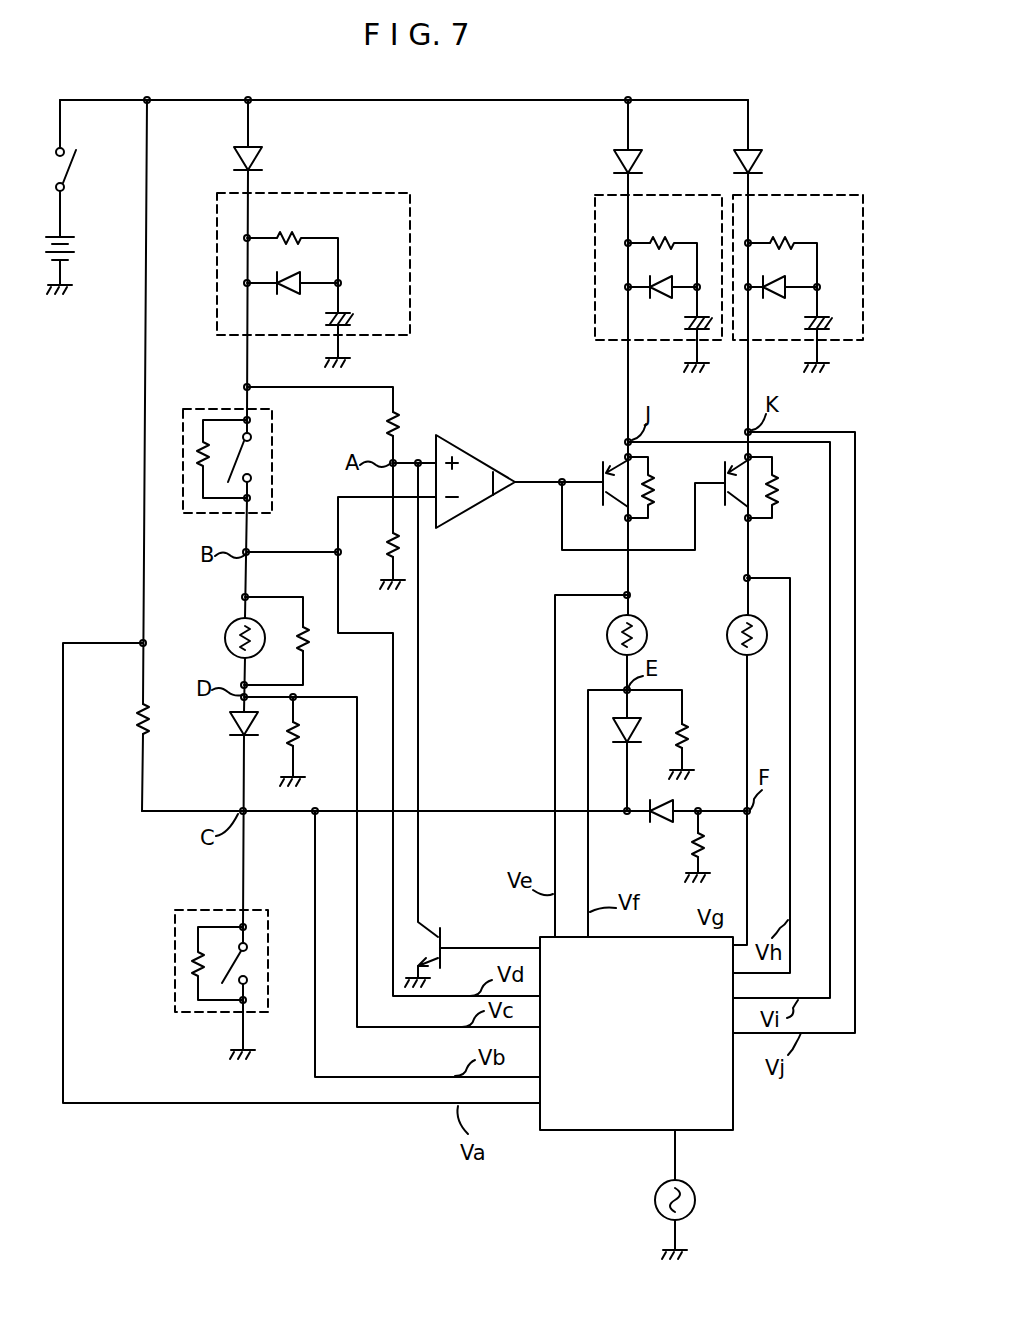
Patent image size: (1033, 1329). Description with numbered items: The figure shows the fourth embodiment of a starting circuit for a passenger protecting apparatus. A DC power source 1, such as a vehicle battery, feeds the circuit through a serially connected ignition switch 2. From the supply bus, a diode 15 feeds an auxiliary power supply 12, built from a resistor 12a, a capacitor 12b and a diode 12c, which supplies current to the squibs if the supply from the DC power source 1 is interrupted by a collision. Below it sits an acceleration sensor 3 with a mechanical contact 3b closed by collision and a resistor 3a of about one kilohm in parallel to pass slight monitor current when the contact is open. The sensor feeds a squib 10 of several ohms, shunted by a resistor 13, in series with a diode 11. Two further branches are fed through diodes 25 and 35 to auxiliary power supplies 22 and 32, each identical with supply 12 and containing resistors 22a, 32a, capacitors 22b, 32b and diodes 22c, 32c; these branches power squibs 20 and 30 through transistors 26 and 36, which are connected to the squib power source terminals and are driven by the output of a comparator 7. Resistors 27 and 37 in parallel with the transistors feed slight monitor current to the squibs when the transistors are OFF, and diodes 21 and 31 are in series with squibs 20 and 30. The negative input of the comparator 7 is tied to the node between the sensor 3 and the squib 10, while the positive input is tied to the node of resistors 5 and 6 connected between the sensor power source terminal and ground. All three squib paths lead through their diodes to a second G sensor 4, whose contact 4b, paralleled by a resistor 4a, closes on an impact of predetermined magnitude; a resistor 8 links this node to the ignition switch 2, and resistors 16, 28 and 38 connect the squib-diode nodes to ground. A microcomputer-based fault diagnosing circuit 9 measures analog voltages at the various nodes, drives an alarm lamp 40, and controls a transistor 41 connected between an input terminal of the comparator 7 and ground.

The DC power source 1 is at (75, 247).
The ignition switch 2 is at (78, 168).
The acceleration sensor 3 is at (203, 406).
The resistor 3a is at (200, 462).
The mechanical contact 3b is at (252, 456).
The second G sensor 4 is at (172, 928).
The resistor 4a is at (193, 968).
The contact 4b is at (247, 968).
The resistor 5 is at (399, 425).
The resistor 6 is at (387, 541).
The comparator 7 is at (470, 462).
The resistor 8 is at (135, 723).
The fault diagnosing circuit 9 is at (598, 1133).
The squib 10 is at (230, 620).
The diode 11 is at (228, 740).
The auxiliary power supply 12 is at (372, 193).
The resistor 12a is at (292, 236).
The capacitor 12b is at (350, 322).
The diode 12c is at (290, 294).
The resistor 13 is at (309, 648).
The diode 15 is at (262, 158).
The resistor 16 is at (300, 752).
The squib 20 is at (608, 628).
The diode 21 is at (630, 745).
The auxiliary power supply 22 is at (593, 262).
The resistor 22a is at (660, 237).
The capacitor 22b is at (682, 330).
The diode 22c is at (660, 298).
The diode 25 is at (612, 158).
The transistor 26 is at (600, 465).
The resistor 27 is at (655, 488).
The resistor 28 is at (688, 740).
The squib 30 is at (730, 628).
The diode 31 is at (650, 830).
The auxiliary power supply 32 is at (805, 193).
The resistor 32a is at (780, 237).
The capacitor 32b is at (805, 330).
The diode 32c is at (772, 298).
The diode 35 is at (740, 158).
The transistor 36 is at (722, 468).
The resistor 37 is at (778, 488).
The resistor 38 is at (692, 848).
The alarm lamp 40 is at (697, 1200).
The transistor 41 is at (443, 922).